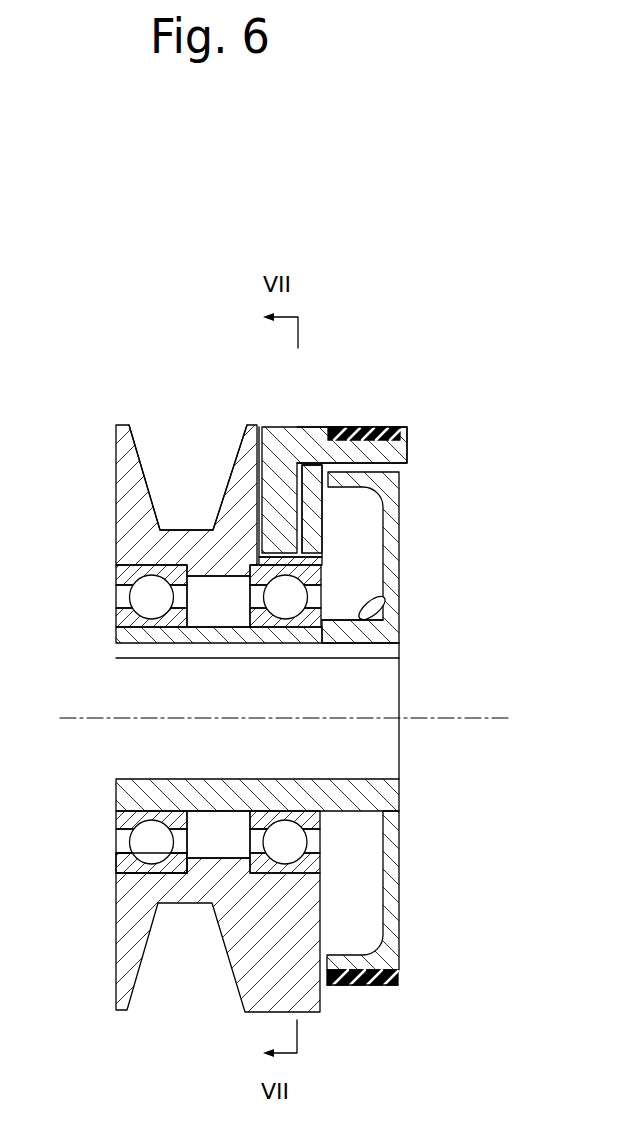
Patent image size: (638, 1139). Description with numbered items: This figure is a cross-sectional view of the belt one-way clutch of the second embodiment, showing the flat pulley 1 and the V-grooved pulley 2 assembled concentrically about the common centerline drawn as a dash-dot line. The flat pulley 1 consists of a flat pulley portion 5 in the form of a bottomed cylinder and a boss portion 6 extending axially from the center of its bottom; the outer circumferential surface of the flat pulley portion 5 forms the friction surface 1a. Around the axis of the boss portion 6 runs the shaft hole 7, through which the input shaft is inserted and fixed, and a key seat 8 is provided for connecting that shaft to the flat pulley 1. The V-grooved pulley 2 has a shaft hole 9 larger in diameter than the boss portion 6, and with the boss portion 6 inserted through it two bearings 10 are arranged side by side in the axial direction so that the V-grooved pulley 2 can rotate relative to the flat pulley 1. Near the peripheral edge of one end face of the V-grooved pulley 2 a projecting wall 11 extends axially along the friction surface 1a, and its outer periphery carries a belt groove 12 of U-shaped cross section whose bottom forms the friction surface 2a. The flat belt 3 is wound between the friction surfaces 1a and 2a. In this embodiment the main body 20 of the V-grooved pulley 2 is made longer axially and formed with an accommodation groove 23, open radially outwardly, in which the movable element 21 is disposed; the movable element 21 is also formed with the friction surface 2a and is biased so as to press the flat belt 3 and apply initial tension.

The flat pulley 1 is at (397, 721).
The friction surface 1a is at (366, 987).
The V-grooved pulley 2 is at (117, 498).
The friction surface 2a is at (365, 427).
The flat belt 3 is at (398, 977).
The flat pulley portion 5 is at (400, 487).
The boss portion 6 is at (382, 598).
The shaft hole 7 is at (357, 780).
The key seat 8 is at (357, 643).
The shaft hole 9 is at (133, 868).
The bearings 10 is at (283, 875).
The projecting wall 11 is at (407, 444).
The belt groove 12 is at (338, 427).
The main body 20 is at (228, 480).
The movable element 21 is at (305, 427).
The accommodation groove 23 is at (287, 553).